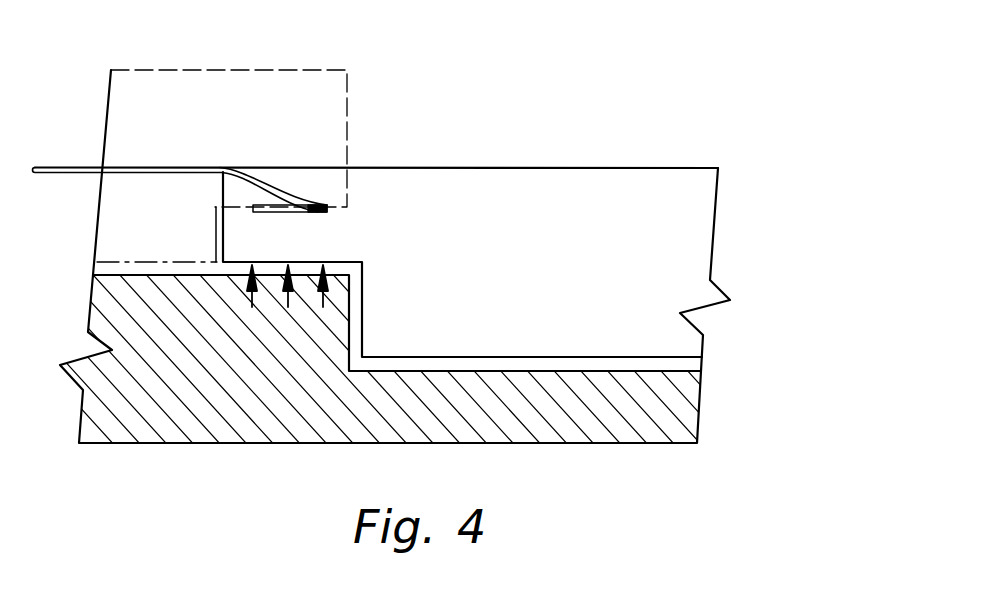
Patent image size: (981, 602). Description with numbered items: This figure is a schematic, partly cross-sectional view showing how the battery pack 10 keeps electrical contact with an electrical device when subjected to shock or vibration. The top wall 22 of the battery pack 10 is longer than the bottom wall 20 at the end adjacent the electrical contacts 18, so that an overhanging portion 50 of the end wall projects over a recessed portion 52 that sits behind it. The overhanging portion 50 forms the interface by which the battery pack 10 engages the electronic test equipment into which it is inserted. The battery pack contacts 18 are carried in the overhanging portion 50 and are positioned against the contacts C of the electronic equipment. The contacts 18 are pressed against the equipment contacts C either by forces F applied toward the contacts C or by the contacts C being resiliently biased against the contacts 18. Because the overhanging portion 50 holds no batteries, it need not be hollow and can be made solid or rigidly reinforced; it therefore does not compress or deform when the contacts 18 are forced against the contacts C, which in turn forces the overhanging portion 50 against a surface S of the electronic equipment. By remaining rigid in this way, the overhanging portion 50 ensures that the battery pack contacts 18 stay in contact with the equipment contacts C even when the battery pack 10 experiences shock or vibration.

The battery pack 10 is at (742, 258).
The electrical contacts 18 is at (328, 213).
The bottom wall 20 is at (663, 357).
The top wall 22 is at (625, 168).
The overhanging portion 50 is at (248, 240).
The recessed portion 52 is at (363, 332).
The contacts of the electronic equipment C is at (264, 167).
The surface of the electronic equipment S is at (173, 277).
The forces F is at (288, 304).